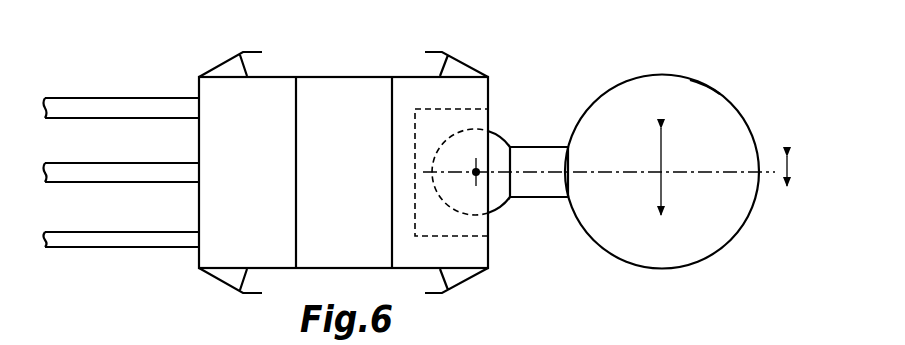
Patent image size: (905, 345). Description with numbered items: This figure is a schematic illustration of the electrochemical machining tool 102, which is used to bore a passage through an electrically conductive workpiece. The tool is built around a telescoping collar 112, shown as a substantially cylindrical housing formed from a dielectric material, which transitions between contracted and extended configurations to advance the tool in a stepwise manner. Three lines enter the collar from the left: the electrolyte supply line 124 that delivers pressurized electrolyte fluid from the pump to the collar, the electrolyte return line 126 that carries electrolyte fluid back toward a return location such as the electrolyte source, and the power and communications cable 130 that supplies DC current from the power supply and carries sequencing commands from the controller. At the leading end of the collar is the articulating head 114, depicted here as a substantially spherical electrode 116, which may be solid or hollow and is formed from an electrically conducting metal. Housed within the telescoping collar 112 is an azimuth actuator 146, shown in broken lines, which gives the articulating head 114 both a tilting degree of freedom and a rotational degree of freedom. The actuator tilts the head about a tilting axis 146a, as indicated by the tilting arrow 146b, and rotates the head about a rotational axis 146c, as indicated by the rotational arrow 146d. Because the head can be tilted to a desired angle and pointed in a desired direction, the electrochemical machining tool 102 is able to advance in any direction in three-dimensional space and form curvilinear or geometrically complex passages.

The electrochemical machining tool 102 is at (512, 50).
The telescoping collar 112 is at (314, 76).
The articulating head 114 is at (657, 75).
The substantially spherical electrode 116 is at (705, 85).
The electrolyte supply line 124 is at (109, 98).
The electrolyte return line 126 is at (109, 163).
The power and communications cable 130 is at (109, 232).
The azimuth actuator 146 is at (453, 237).
The tilting axis 146a is at (472, 167).
The tilting arrow 146b is at (792, 172).
The rotational axis 146c is at (715, 172).
The rotational arrow 146d is at (665, 162).